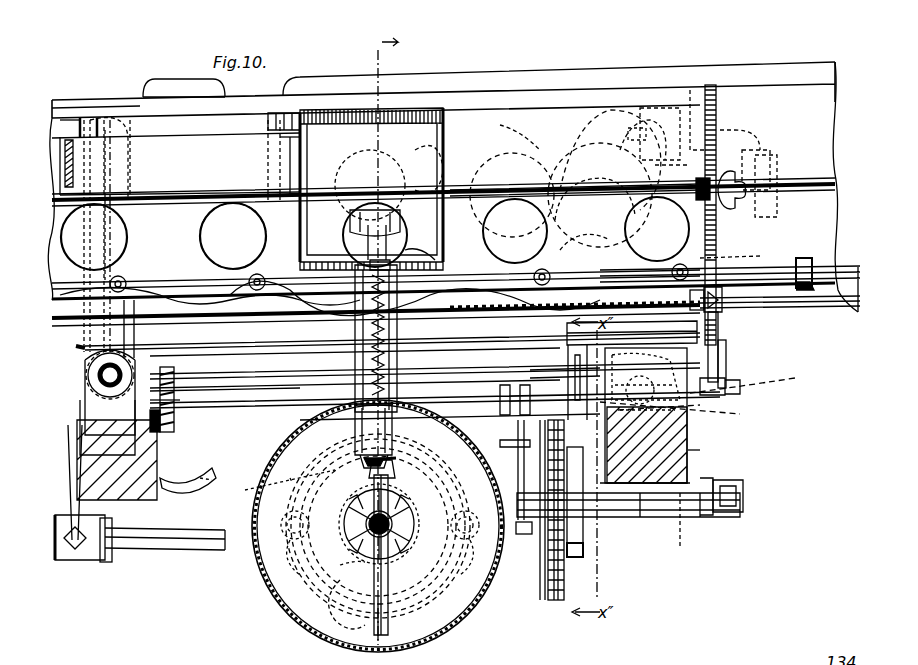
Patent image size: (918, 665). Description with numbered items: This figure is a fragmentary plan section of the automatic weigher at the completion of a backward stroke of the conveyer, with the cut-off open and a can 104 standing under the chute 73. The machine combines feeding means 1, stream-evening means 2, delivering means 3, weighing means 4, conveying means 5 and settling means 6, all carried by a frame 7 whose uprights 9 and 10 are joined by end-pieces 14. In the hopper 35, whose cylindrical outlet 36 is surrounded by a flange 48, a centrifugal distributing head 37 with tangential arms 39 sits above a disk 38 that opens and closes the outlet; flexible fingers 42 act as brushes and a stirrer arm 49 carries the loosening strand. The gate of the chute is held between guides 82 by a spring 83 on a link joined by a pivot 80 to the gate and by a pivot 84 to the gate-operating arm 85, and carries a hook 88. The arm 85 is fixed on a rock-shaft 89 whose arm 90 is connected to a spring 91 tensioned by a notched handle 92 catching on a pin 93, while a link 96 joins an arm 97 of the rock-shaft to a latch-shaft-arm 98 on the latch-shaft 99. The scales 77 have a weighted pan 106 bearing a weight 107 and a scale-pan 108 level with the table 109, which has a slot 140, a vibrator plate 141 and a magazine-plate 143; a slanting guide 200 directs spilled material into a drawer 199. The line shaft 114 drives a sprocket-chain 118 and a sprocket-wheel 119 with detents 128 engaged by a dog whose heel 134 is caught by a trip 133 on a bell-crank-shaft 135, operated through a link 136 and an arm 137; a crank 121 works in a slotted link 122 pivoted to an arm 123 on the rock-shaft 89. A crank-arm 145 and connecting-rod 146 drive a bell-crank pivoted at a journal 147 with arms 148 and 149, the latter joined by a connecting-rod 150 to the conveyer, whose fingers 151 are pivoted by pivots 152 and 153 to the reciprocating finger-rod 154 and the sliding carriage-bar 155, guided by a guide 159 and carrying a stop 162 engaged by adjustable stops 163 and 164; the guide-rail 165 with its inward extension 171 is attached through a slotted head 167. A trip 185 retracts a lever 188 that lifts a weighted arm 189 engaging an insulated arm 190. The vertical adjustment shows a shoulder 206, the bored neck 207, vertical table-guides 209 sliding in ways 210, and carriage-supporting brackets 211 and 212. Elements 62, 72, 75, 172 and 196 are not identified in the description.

The feeding means 1 is at (246, 585).
The stream-evening means 2 is at (372, 488).
The delivering means 3 is at (338, 363).
The weighing means 4 is at (287, 160).
The conveying means 5 is at (185, 228).
The settling means 6 is at (126, 175).
The frame 7 is at (718, 452).
The upright 9 is at (665, 600).
The upright 10 is at (95, 560).
The end-piece 14 is at (384, 332).
The hopper 35 is at (290, 605).
The cylindrical outlet 36 is at (423, 566).
The centrifugal distributing head 37 is at (355, 520).
The disk 38 is at (420, 495).
The tangential arm 39 is at (370, 555).
The flexible finger 42 is at (425, 492).
The flange 48 is at (365, 590).
The arm 49 is at (395, 605).
The hub 62 is at (392, 522).
The wedge 72 is at (392, 462).
The chute 73 is at (405, 355).
The lobe 75 is at (318, 552).
The scales 77 is at (575, 115).
The pivot 80 is at (345, 225).
The guide 82 is at (430, 255).
The spring 83 is at (402, 332).
The pivot 84 is at (500, 205).
The gate-operating arm 85 is at (360, 330).
The hook 88 is at (398, 228).
The rock-shaft 89 is at (740, 414).
The arm 90 is at (172, 370).
The spring 91 is at (176, 415).
The notched handle 92 is at (182, 492).
The pin 93 is at (178, 483).
The link 96 is at (718, 352).
The arm 97 is at (720, 335).
The latch-shaft-arm 98 is at (728, 383).
The latch-shaft 99 is at (795, 378).
The can 104 is at (348, 160).
The weighted pan 106 is at (588, 110).
The weight 107 is at (630, 110).
The scale-pan 108 is at (425, 148).
The table 109 is at (84, 86).
The line shaft 114 is at (160, 552).
The sprocket-chain 118 is at (558, 600).
The sprocket-wheel 119 is at (545, 585).
The crank 121 is at (518, 475).
The slotted link 122 is at (505, 415).
The arm 123 is at (498, 393).
The detent 128 is at (585, 555).
The trip 133 is at (688, 430).
The heel 134 is at (640, 517).
The bell-crank-shaft 135 is at (565, 402).
The link 136 is at (565, 335).
The arm 137 is at (618, 378).
The slot 140 is at (425, 108).
The vibrator plate 141 is at (145, 166).
The magazine-plate 143 is at (550, 160).
The crank-arm 145 is at (725, 515).
The connecting-rod 146 is at (745, 496).
The journal 147 is at (572, 380).
The arm 148 is at (672, 530).
The arm 149 is at (570, 222).
The connecting-rod 150 is at (100, 384).
The finger 151 is at (650, 260).
The pivot 152 is at (240, 384).
The pivot 153 is at (262, 310).
The reciprocating finger-rod 154 is at (210, 320).
The sliding carriage-bar 155 is at (218, 262).
The guide 159 is at (815, 262).
The stop 162 is at (712, 312).
The adjustable stop 163 is at (798, 275).
The adjustable stop 164 is at (698, 195).
The guide-rail 165 is at (505, 168).
The slotted head 167 is at (718, 112).
The inward extension 171 is at (575, 178).
The wing nut 172 is at (745, 185).
The trip 185 is at (815, 308).
The lever 188 is at (735, 265).
The weighted arm 189 is at (700, 130).
The insulated arm 190 is at (662, 130).
The cam 196 is at (530, 102).
The drawer 199 is at (165, 86).
The slanting guide 200 is at (372, 112).
The shoulder 206 is at (358, 432).
The bored neck 207 is at (355, 390).
The vertical table-guide 209 is at (775, 438).
The way 210 is at (85, 348).
The carriage-supporting bracket 211 is at (636, 140).
The carriage-supporting bracket 212 is at (100, 130).